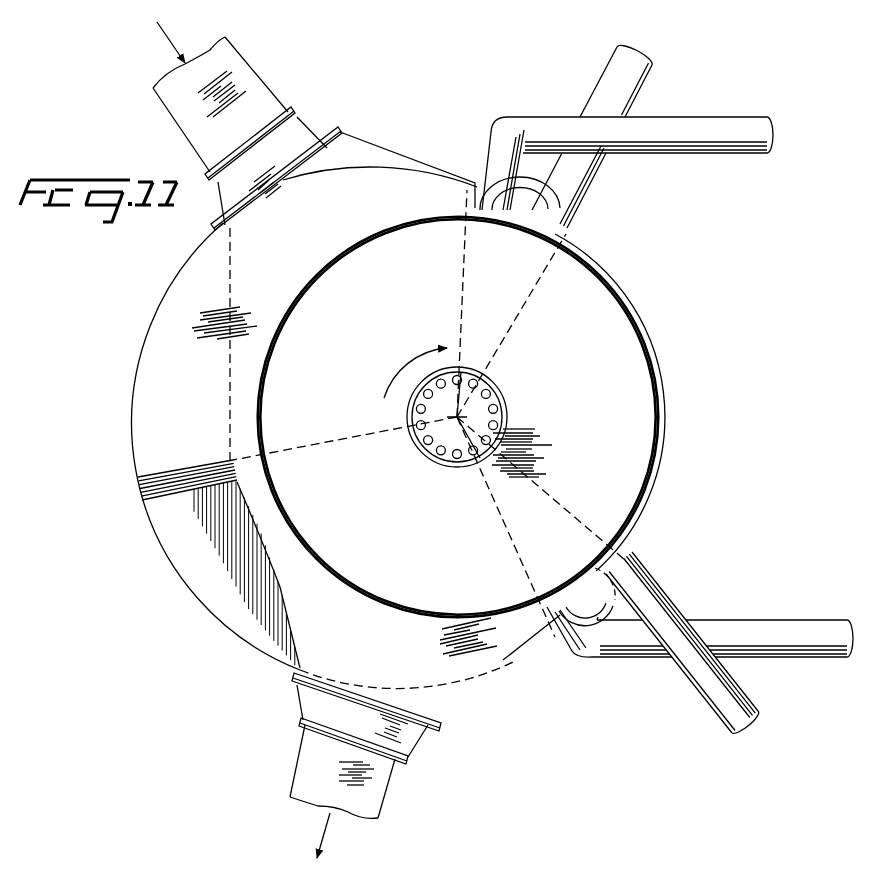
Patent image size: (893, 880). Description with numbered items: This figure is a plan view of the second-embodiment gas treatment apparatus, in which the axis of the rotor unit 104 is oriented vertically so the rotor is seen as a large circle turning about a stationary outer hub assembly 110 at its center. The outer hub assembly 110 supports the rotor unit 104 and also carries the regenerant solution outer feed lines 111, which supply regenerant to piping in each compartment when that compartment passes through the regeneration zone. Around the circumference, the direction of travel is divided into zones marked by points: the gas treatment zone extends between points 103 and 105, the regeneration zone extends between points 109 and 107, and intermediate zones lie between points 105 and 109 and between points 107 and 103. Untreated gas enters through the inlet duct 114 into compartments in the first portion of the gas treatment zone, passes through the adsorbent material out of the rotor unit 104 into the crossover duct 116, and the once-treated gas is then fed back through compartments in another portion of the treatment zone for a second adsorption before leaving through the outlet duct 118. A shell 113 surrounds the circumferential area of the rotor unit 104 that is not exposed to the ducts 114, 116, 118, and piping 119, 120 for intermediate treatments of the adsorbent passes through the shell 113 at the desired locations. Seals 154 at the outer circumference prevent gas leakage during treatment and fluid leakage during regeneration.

The point 103 is at (537, 597).
The rotor unit 104 is at (623, 377).
The point 105 is at (463, 228).
The point 107 is at (610, 547).
The point 109 is at (553, 272).
The outer hub assembly 110 is at (507, 410).
The regenerant solution outer feed lines 111 is at (495, 387).
The shell 113 is at (650, 333).
The inlet duct 114 is at (182, 103).
The crossover duct 116 is at (177, 462).
The outlet duct 118 is at (372, 795).
The piping 119 is at (640, 110).
The piping 120 is at (673, 594).
The seals 154 is at (657, 415).